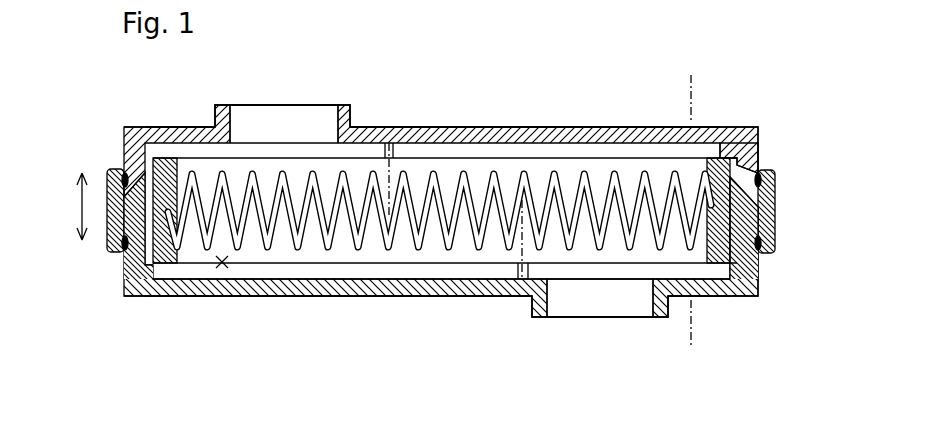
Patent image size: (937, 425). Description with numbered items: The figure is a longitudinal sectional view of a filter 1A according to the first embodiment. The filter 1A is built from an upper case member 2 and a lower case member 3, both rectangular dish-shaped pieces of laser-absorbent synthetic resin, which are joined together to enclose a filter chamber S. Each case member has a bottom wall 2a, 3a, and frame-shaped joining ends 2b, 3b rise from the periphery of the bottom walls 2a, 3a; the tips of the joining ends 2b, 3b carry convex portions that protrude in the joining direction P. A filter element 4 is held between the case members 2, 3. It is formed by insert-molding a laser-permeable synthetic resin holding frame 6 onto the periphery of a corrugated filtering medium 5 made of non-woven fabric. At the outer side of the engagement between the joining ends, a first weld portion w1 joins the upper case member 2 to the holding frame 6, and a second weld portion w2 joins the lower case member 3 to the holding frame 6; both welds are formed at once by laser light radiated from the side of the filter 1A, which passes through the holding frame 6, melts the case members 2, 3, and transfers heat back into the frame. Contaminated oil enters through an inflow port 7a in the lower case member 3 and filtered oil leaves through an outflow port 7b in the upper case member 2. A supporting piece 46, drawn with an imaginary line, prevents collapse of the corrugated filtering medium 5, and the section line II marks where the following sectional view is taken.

The filter 1A is at (755, 97).
The upper case member 2 is at (468, 128).
The bottom wall of upper case member 2a is at (462, 136).
The joining end of upper case member 2b is at (748, 144).
The lower case member 3 is at (470, 272).
The bottom wall of lower case member 3a is at (427, 287).
The joining end of lower case member 3b is at (748, 262).
The filter element 4 is at (721, 149).
The corrugated filtering medium 5 is at (534, 183).
The holding frame 6 is at (776, 200).
The inflow port 7a is at (548, 293).
The outflow port 7b is at (232, 124).
The supporting piece 46 is at (391, 162).
The filter chamber S is at (222, 266).
The first weld portion w1 is at (760, 175).
The second weld portion w2 is at (762, 246).
The joining direction P is at (78, 203).
The section line II- II is at (680, 88).